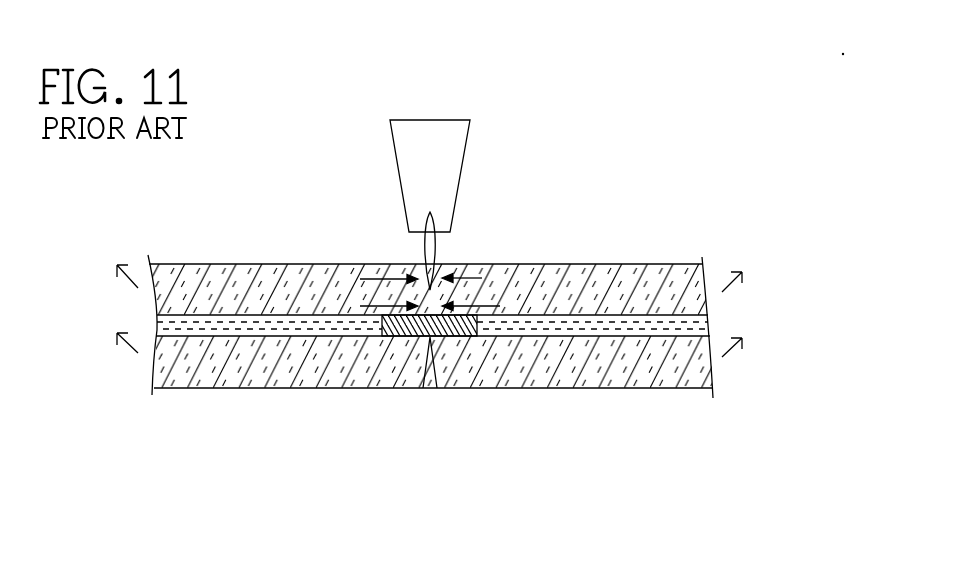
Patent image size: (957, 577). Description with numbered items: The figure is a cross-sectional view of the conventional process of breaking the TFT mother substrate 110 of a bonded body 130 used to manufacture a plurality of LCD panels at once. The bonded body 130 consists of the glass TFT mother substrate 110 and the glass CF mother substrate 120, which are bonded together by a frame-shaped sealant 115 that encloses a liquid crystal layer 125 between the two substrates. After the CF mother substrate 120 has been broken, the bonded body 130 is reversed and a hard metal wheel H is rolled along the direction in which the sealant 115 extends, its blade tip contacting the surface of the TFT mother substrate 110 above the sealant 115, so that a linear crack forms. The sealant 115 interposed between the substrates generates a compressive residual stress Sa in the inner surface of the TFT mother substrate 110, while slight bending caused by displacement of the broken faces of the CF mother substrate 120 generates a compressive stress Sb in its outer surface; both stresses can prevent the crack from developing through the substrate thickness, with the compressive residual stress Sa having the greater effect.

The TFT mother substrate 110 is at (705, 307).
The CF mother substrate 120 is at (705, 378).
The bonded body 130 is at (825, 283).
The sealant 115 is at (453, 336).
The liquid crystal layer 125 is at (627, 326).
The hard metal wheel H is at (372, 177).
The compressive residual stress Sa is at (500, 306).
The compressive stress Sb is at (482, 278).